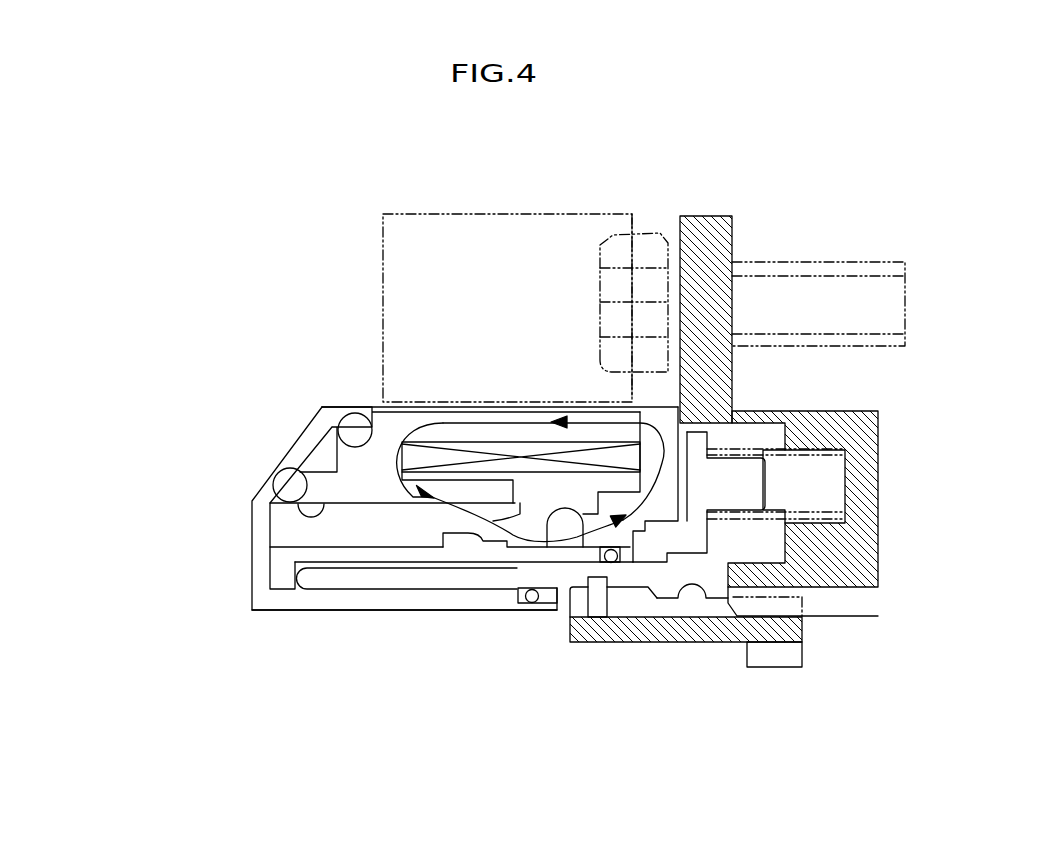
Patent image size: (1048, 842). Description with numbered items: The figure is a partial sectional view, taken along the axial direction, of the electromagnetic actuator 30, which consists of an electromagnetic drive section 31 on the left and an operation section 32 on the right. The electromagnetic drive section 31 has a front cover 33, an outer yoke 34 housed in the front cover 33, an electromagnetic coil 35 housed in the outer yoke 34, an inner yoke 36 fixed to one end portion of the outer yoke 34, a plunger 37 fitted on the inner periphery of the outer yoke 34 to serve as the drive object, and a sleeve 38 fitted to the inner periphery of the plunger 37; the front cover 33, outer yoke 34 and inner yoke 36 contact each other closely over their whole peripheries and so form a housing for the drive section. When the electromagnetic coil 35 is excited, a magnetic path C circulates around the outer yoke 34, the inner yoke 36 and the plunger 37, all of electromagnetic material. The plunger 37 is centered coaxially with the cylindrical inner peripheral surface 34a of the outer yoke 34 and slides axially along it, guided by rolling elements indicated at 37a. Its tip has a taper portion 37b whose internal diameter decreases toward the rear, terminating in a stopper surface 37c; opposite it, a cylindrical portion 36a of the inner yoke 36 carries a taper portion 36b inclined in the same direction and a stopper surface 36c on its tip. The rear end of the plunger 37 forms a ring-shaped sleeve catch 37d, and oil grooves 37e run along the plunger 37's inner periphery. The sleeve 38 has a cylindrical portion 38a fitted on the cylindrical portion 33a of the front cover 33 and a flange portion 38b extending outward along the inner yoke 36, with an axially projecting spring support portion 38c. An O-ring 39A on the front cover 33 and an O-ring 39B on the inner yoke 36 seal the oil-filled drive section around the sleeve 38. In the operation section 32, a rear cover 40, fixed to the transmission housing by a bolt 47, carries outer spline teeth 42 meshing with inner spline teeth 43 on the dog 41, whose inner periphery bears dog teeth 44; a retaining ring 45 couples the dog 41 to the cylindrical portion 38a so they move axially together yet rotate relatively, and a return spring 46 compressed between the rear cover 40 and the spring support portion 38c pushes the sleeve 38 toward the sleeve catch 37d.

The electromagnetic actuator 30 is at (460, 289).
The electromagnetic drive section 31 is at (470, 363).
The operation section 32 is at (910, 410).
The front cover 33 is at (258, 533).
The cylindrical portion 33a is at (377, 605).
The outer yoke 34 is at (422, 413).
The inner peripheral surface 34a is at (290, 495).
The electromagnetic coil 35 is at (512, 440).
The inner yoke 36 is at (638, 418).
The cylindrical portion 36a is at (585, 618).
The taper portion 36b is at (567, 548).
The stopper surface 36c is at (486, 540).
The plunger 37 is at (293, 533).
The bearing race 37a is at (373, 503).
The taper portion 37b is at (480, 556).
The stopper surface 37c is at (432, 562).
The sleeve catch 37d is at (282, 572).
The oil grooves 37e is at (327, 553).
The sleeve 38 is at (362, 577).
The cylindrical portion 38a is at (335, 583).
The flange portion 38b is at (698, 533).
The spring support portion 38c is at (753, 473).
The O-ring 39A is at (515, 603).
The O-ring 39B is at (622, 565).
The rear cover 40 is at (878, 536).
The dog 41 is at (702, 642).
The outer spline teeth 42 is at (852, 606).
The inner spline teeth 43 is at (681, 600).
The dog teeth 44 is at (778, 657).
The retaining ring 45 is at (597, 600).
The return spring 46 is at (783, 410).
The bolt 47 is at (623, 228).
The magnetic path C is at (462, 424).